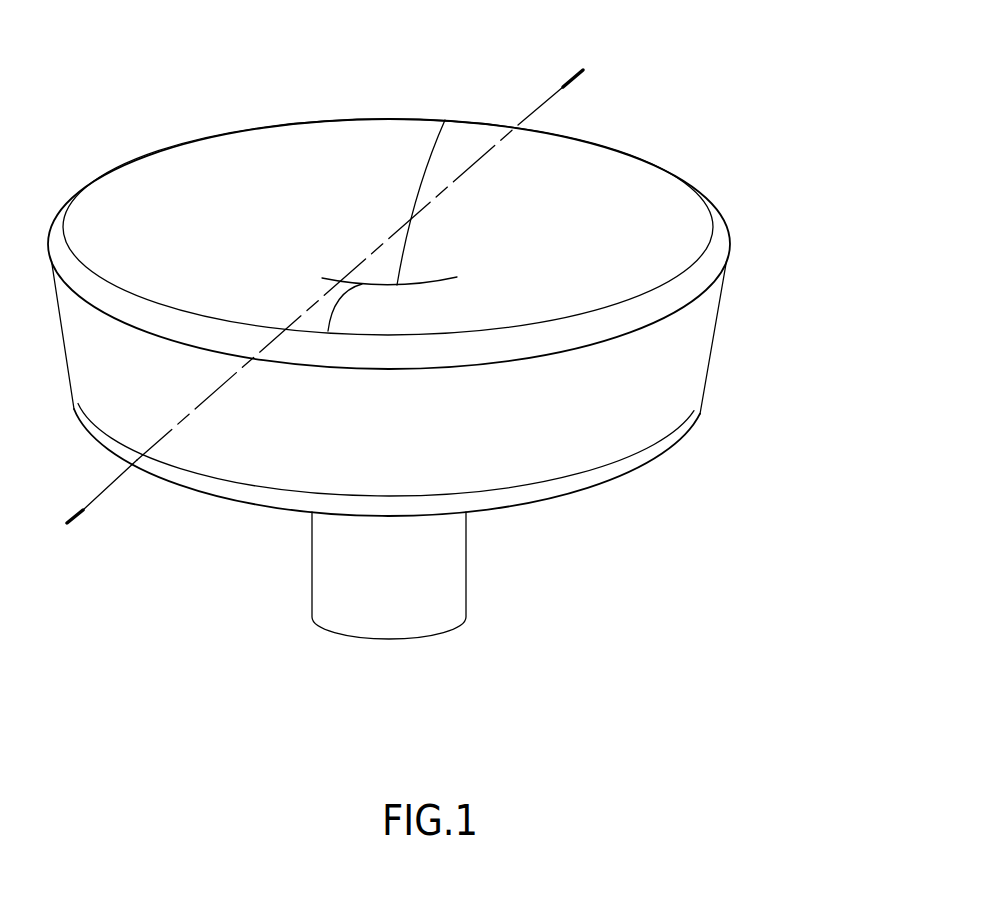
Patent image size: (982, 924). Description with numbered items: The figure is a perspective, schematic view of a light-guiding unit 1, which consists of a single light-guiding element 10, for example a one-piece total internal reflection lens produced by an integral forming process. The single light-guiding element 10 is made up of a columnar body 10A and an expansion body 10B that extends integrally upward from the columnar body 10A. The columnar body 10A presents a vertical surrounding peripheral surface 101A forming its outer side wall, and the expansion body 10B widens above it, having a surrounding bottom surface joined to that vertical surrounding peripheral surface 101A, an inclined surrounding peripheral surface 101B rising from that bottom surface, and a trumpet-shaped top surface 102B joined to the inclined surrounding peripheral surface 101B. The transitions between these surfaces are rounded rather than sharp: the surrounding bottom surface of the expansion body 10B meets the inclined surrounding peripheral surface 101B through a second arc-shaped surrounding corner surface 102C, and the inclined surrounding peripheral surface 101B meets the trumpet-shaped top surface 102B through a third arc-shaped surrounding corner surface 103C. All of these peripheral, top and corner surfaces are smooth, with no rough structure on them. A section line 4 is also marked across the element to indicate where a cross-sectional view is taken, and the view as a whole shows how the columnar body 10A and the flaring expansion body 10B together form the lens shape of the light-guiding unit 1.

The light-guiding unit 1 is at (113, 102).
The section line of FIG. 4 is at (587, 82).
The single light-guiding element 10 is at (237, 687).
The columnar body 10A is at (342, 585).
The expansion body 10B is at (263, 448).
The vertical surrounding peripheral surface 101A is at (455, 567).
The inclined surrounding peripheral surface 101B is at (692, 377).
The trumpet-shaped top surface 102B is at (642, 213).
The second arc-shaped surrounding corner surface 102C is at (635, 465).
The third arc-shaped surrounding corner surface 103C is at (715, 262).